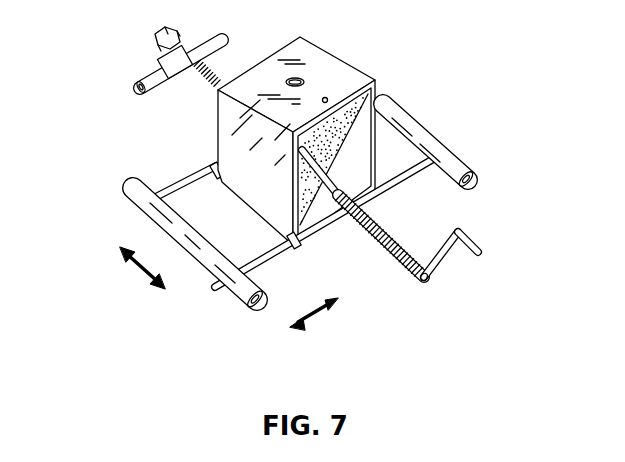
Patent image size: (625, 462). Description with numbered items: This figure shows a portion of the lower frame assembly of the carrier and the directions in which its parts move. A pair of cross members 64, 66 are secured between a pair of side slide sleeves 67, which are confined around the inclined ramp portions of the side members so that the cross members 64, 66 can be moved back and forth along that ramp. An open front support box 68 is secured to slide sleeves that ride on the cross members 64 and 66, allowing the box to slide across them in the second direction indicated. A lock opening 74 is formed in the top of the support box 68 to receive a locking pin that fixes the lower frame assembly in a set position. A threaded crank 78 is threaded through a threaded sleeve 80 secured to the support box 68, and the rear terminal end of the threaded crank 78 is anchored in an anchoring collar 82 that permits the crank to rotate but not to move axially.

The cross member 64 is at (205, 175).
The cross member 66 is at (286, 254).
The side slide sleeve 67 is at (230, 302).
The open front support box 68 is at (245, 127).
The lock opening 74 is at (326, 98).
The threaded crank 78 is at (445, 258).
The threaded sleeve 80 is at (323, 174).
The anchoring collar 82 is at (178, 44).